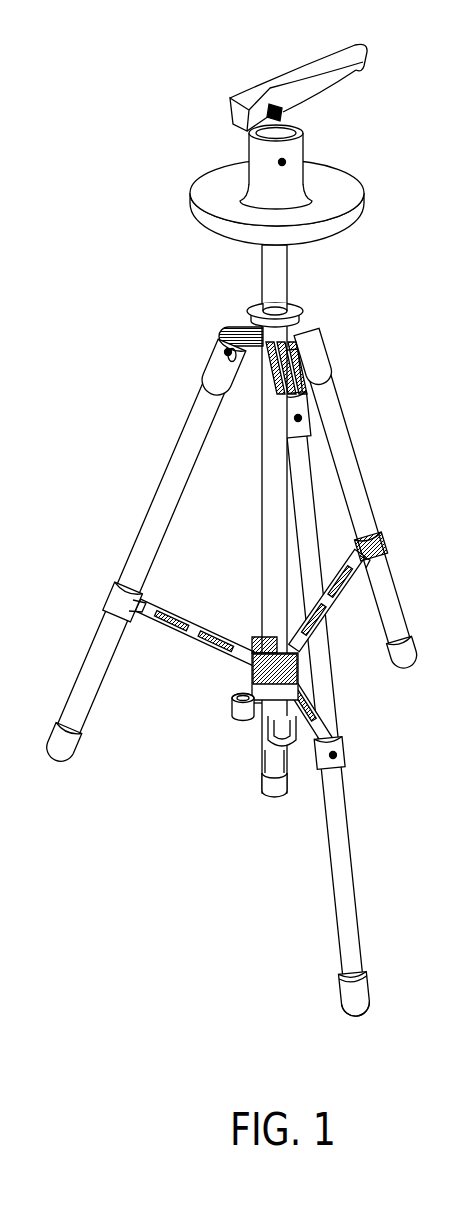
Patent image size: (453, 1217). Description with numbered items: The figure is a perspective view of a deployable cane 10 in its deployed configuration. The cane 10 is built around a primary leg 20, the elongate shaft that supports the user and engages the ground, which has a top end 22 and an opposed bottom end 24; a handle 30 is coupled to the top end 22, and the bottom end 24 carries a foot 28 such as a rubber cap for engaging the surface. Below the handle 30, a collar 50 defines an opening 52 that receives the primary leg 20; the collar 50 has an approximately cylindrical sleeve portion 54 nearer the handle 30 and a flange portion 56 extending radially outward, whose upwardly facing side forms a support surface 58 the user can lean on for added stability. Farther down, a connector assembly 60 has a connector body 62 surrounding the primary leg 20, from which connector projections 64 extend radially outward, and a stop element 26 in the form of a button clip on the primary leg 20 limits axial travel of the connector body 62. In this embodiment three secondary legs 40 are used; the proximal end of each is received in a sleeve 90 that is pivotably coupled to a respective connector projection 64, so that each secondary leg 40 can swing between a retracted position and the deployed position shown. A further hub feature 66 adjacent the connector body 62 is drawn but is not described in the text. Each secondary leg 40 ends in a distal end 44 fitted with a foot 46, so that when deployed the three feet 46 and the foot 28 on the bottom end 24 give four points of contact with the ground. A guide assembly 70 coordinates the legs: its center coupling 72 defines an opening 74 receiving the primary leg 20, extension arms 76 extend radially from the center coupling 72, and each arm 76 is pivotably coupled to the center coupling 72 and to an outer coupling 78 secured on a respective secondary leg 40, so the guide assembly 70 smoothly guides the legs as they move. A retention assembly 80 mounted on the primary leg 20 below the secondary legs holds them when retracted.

The cane 10 is at (160, 177).
The primary leg 20 is at (268, 537).
The top end 22 is at (196, 574).
The bottom end 24 is at (277, 804).
The stop element 26 is at (276, 158).
The foot 28 is at (265, 790).
The handle 30 is at (316, 77).
The secondary legs 40 is at (232, 684).
The distal end 44 is at (338, 966).
The foot 46 is at (350, 1000).
The collar 50 is at (280, 182).
The opening 52 is at (273, 112).
The sleeve portion 54 is at (263, 165).
The flange portion 56 is at (340, 224).
The support surface 58 is at (331, 197).
The connector assembly 60 is at (231, 368).
The connector body 62 is at (316, 320).
The connector projections 64 is at (238, 396).
The hub body 66 is at (246, 327).
The guide assembly 70 is at (230, 639).
The center coupling 72 is at (254, 702).
The opening 74 is at (265, 645).
The extension arms 76 is at (163, 605).
The outer couplings 78 is at (112, 606).
The retention assembly 80 is at (247, 744).
The sleeves 90 is at (211, 377).